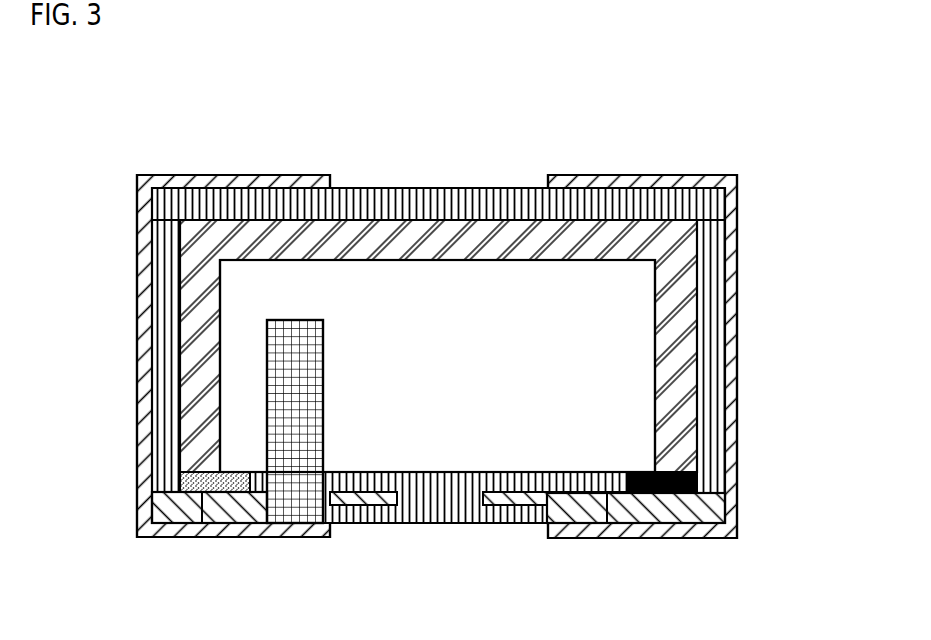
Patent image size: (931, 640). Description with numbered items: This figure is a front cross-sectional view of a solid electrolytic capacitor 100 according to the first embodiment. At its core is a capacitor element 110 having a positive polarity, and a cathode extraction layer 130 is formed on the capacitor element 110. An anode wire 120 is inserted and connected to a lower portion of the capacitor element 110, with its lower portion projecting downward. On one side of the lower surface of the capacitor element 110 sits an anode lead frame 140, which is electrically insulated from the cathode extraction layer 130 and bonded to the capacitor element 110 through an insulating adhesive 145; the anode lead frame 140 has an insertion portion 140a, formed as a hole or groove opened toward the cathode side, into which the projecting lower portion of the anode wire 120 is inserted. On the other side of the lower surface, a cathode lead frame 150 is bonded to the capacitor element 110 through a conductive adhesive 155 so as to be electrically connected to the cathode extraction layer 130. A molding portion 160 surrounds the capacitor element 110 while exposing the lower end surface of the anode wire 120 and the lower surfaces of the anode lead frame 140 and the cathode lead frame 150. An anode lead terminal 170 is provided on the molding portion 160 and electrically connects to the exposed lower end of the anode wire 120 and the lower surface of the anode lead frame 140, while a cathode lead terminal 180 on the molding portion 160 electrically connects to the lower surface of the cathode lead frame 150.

The solid electrolytic capacitor 100 is at (697, 157).
The capacitor element 110 is at (394, 288).
The anode wire 120 is at (287, 387).
The cathode extraction layer 130 is at (508, 237).
The anode lead frame 140 is at (233, 535).
The insertion portion 140a is at (330, 527).
The insulating adhesive 145 is at (177, 535).
The cathode lead frame 150 is at (682, 517).
The conductive adhesive 155 is at (627, 478).
The molding portion 160 is at (712, 357).
The anode lead terminal 170 is at (140, 270).
The cathode lead terminal 180 is at (730, 268).